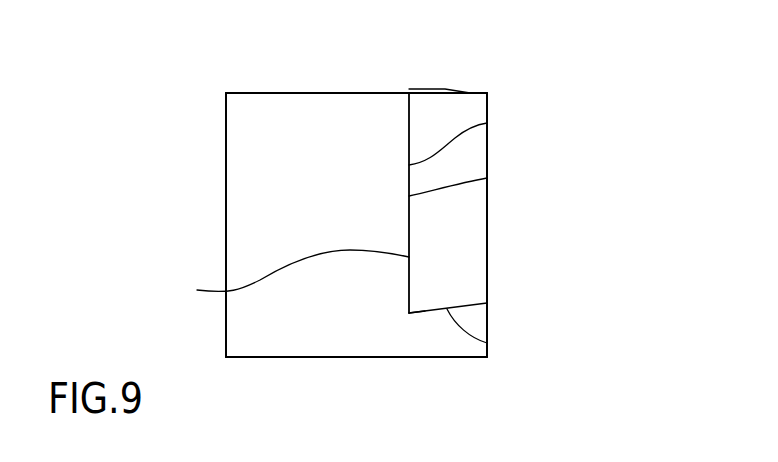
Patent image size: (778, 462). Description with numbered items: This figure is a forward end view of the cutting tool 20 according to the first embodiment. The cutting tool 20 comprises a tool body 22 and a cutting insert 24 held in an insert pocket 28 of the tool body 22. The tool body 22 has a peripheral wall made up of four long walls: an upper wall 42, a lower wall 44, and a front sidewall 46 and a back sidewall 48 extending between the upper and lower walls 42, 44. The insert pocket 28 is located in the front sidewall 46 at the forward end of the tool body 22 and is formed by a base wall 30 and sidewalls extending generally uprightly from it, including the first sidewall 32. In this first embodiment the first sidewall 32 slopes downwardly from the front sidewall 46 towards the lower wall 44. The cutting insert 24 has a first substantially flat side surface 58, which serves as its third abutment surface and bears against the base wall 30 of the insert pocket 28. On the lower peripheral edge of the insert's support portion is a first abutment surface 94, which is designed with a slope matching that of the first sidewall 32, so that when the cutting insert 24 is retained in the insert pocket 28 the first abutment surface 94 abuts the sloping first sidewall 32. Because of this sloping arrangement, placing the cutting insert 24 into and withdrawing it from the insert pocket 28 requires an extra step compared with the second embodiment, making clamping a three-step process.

The cutting tool 20 is at (568, 73).
The tool body 22 is at (328, 93).
The cutting insert 24 is at (473, 209).
The insert pocket 28 is at (540, 227).
The base wall 30 is at (487, 123).
The first sidewall 32 is at (462, 306).
The upper wall 42 is at (297, 92).
The lower wall 44 is at (403, 357).
The front sidewall 46 is at (487, 318).
The back sidewall 48 is at (226, 216).
The first side surface 58 is at (288, 277).
The first abutment surface 94 is at (487, 343).